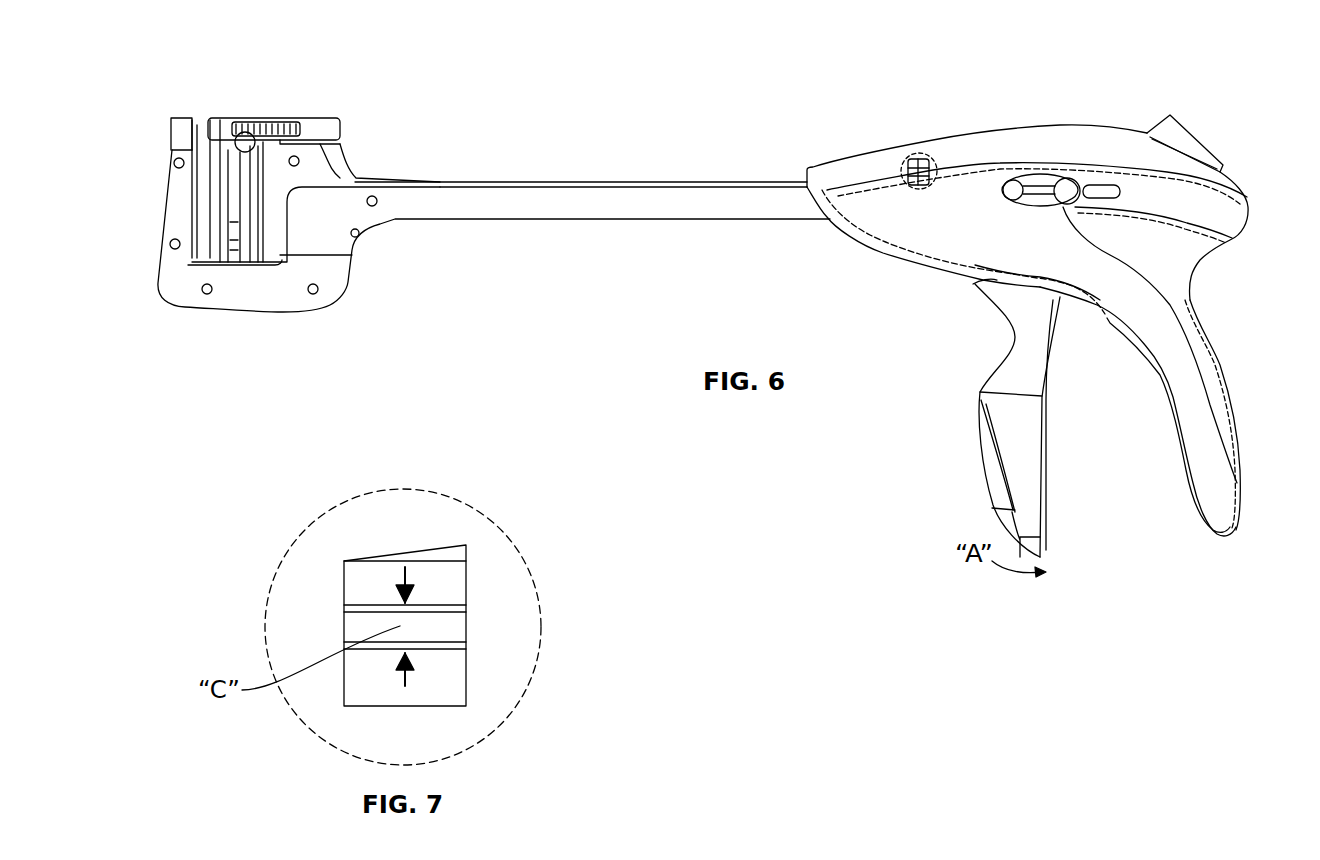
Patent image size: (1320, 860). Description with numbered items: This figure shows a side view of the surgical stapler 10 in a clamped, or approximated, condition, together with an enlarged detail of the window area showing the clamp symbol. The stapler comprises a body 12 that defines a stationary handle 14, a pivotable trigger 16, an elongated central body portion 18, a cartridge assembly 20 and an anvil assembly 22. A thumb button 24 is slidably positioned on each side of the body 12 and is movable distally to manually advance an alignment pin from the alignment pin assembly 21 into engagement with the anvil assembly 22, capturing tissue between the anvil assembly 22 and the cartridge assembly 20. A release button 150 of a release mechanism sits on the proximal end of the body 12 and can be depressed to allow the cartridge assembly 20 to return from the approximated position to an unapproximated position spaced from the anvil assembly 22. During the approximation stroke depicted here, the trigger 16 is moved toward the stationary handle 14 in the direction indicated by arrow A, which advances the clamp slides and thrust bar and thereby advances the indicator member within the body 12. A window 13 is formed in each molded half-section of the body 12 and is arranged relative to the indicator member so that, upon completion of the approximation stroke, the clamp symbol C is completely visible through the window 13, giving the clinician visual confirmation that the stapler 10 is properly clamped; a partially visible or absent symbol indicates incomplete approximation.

In FIG. 6, the surgical stapler 10 is at (762, 53).
In FIG. 6, the body 12 is at (1037, 129).
In FIG. 6, the window 13 is at (898, 158).
In FIG. 7, the window 13 is at (462, 610).
In FIG. 6, the stationary handle 14 is at (1222, 404).
In FIG. 6, the trigger 16 is at (978, 470).
In FIG. 6, the elongated central body portion 18 is at (538, 164).
In FIG. 6, the cartridge assembly 20 is at (258, 91).
In FIG. 7, the cartridge assembly 20 is at (402, 531).
In FIG. 6, the alignment pin assembly 21 is at (352, 129).
In FIG. 6, the anvil assembly 22 is at (169, 170).
In FIG. 6, the thumb button 24 is at (1067, 185).
In FIG. 6, the release button 150 is at (1188, 145).